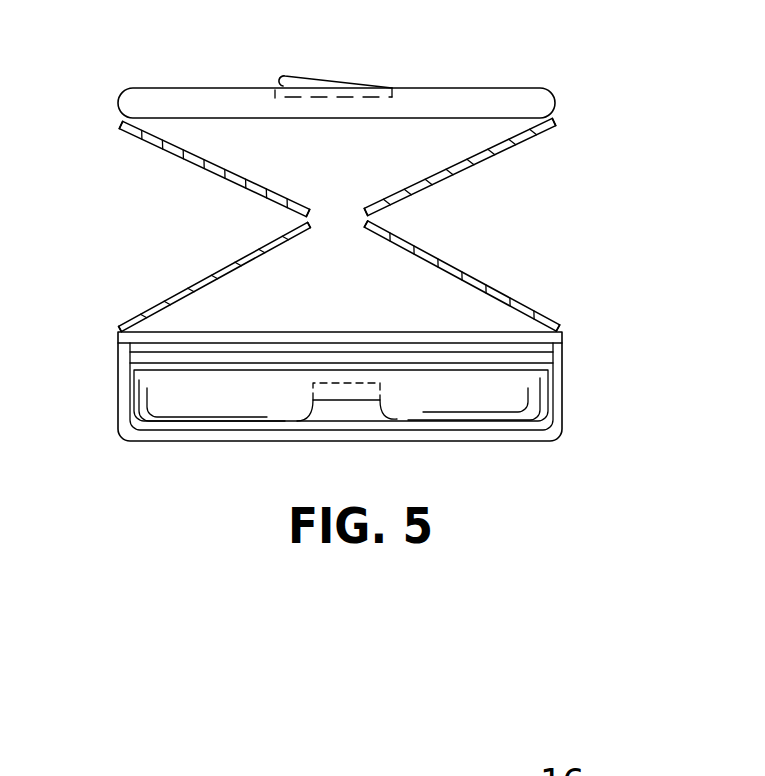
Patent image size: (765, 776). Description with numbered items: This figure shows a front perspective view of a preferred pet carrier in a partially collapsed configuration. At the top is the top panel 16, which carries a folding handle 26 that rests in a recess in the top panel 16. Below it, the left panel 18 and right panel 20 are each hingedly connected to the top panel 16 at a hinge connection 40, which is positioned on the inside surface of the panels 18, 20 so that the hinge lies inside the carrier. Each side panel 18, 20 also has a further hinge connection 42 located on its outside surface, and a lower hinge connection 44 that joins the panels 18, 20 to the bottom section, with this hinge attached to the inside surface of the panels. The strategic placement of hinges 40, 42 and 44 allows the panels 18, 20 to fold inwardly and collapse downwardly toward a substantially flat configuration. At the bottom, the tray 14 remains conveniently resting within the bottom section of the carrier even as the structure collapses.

The tray 14 is at (508, 403).
The top panel 16 is at (484, 90).
The left panel 18 is at (223, 163).
The right panel 20 is at (467, 160).
The folding handle 26 is at (320, 78).
The hinge connection 40 is at (118, 124).
The hinge connection 42 is at (300, 220).
The hinge connection 44 is at (118, 331).